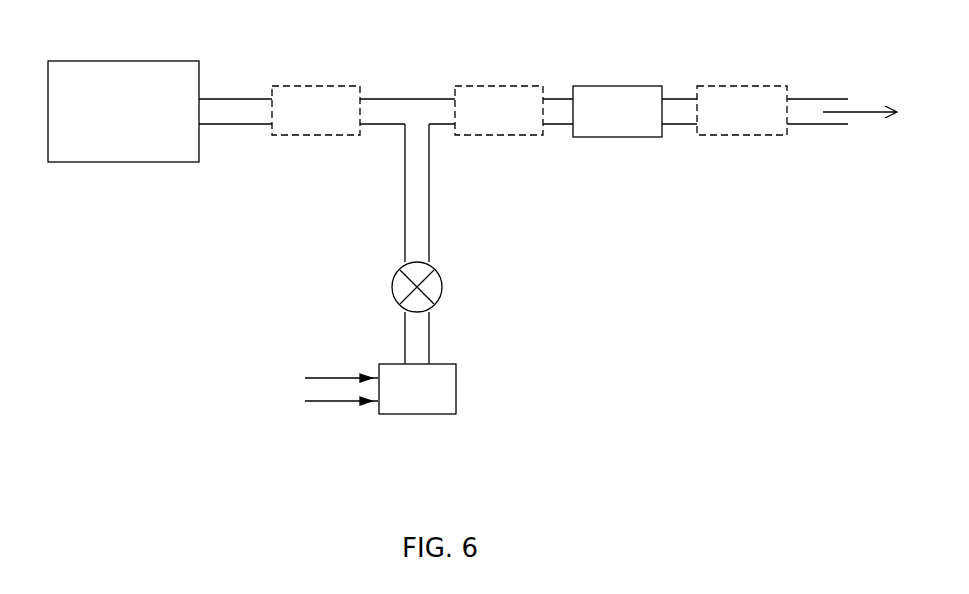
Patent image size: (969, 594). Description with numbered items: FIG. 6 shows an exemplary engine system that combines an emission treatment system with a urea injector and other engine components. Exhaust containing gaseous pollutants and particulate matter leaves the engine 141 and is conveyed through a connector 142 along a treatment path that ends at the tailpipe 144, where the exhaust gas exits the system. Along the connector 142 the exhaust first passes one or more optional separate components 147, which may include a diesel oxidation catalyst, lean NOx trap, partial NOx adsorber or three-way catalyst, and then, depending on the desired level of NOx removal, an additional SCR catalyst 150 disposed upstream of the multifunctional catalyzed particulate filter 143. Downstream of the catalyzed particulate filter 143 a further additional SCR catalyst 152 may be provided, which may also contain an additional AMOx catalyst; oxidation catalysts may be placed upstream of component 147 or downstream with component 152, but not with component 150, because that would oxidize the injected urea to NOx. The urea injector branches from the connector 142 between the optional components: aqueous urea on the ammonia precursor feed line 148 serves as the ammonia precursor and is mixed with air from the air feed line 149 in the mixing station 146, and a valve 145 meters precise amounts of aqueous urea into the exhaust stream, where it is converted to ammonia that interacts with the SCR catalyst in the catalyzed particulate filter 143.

The engine 141 is at (85, 167).
The connector 142 is at (233, 98).
The catalyzed particulate filter 143 is at (612, 140).
The tailpipe 144 is at (865, 110).
The valve 145 is at (443, 285).
The mixing station 146 is at (433, 415).
The separate component 147 is at (288, 138).
The ammonia precursor feed line 148 is at (322, 405).
The air feed line 149 is at (315, 374).
The additional SCR catalyst 150 is at (470, 138).
The additional SCR catalyst 152 is at (717, 140).